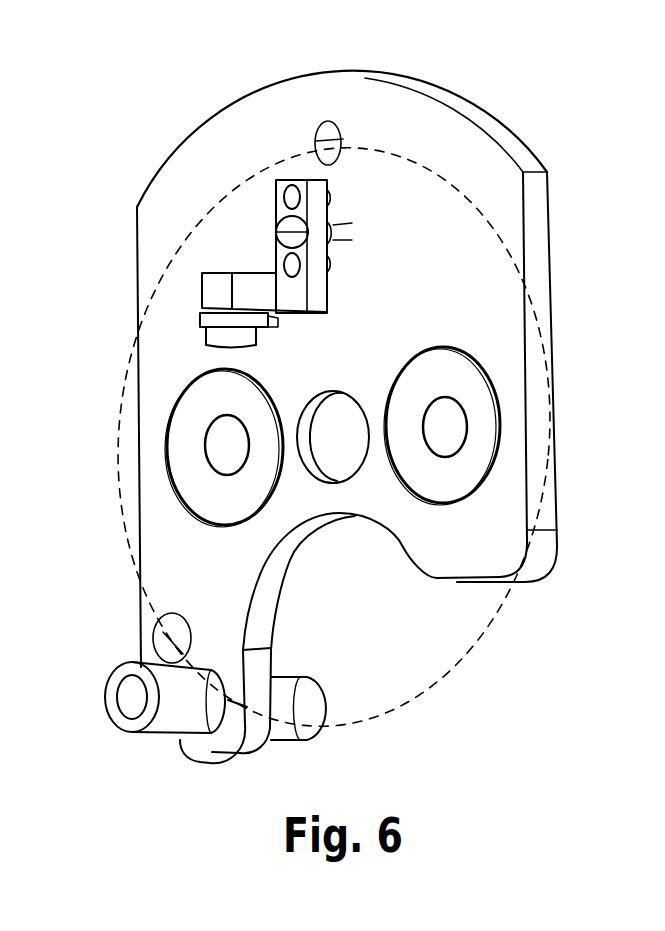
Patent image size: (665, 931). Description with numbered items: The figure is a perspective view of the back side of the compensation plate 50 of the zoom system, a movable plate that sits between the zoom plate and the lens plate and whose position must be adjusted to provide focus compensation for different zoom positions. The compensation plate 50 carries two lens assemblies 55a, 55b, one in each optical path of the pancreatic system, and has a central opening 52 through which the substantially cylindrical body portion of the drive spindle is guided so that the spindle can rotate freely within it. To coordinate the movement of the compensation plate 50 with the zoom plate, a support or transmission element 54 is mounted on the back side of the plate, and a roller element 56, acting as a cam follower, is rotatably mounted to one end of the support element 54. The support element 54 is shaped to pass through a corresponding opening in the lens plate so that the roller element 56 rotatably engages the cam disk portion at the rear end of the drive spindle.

The compensation plate 50 is at (142, 123).
The central opening 52 is at (348, 457).
The support element 54 is at (304, 289).
The lens assembly 55a is at (184, 483).
The lens assembly 55b is at (471, 470).
The roller element 56 is at (174, 310).